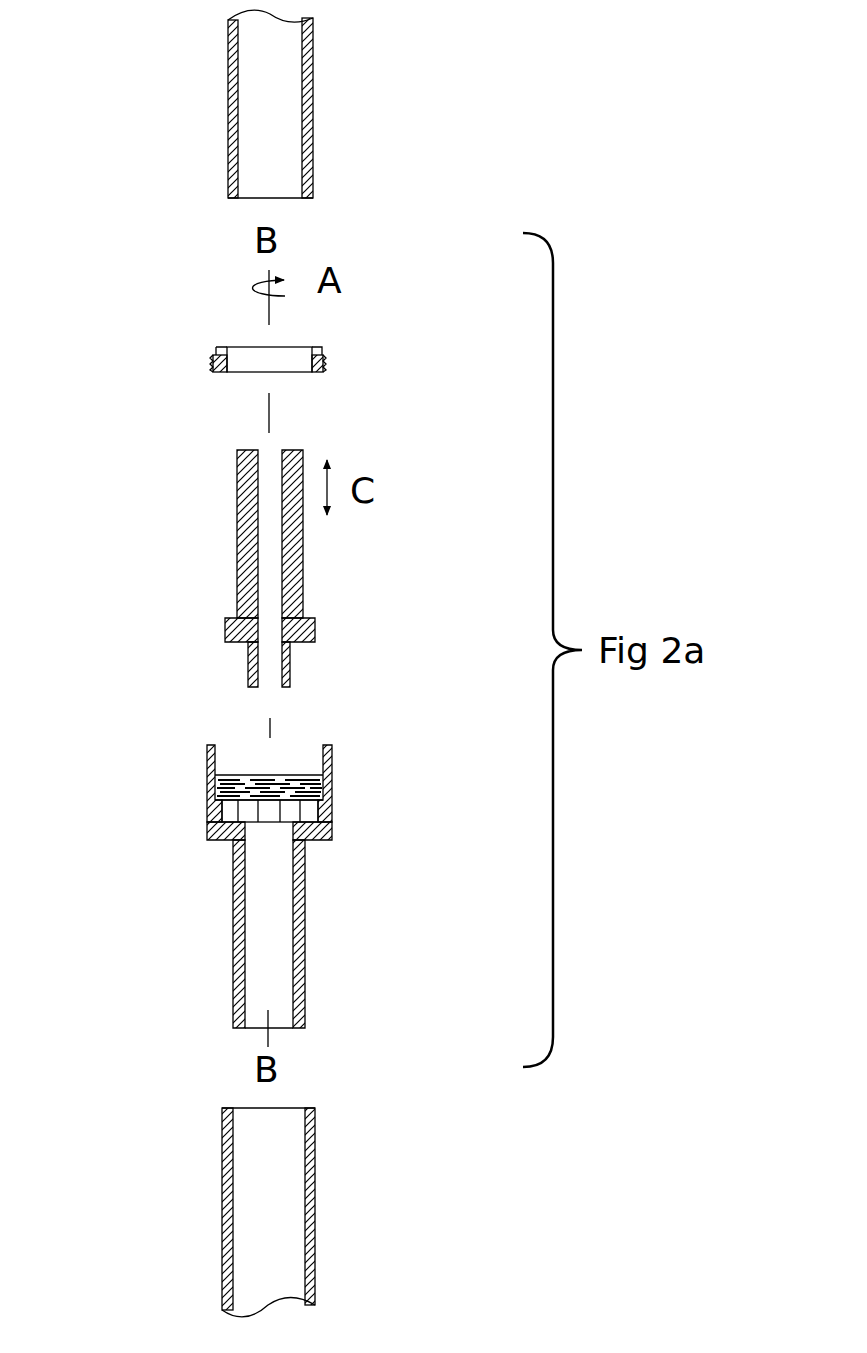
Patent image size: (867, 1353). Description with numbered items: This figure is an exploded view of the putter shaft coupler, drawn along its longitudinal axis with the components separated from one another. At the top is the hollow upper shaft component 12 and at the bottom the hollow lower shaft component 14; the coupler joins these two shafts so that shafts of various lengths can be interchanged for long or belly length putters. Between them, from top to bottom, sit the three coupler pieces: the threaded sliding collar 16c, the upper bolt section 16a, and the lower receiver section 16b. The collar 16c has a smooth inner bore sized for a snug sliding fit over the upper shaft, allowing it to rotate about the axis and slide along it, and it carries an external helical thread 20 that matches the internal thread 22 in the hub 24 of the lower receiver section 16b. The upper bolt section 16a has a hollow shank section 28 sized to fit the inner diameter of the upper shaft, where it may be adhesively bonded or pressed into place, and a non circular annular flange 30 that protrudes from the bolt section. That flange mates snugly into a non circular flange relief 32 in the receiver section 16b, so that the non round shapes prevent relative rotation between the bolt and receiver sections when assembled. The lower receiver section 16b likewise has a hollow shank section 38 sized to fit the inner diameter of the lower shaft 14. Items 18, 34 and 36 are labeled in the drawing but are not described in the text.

The upper shaft component 12 is at (313, 88).
The lower shaft component 14 is at (315, 1225).
The upper bolt section 16a is at (288, 568).
The lower receiver section 16b is at (282, 882).
The threaded sliding collar 16c is at (301, 361).
The nut shoulder 18 is at (230, 345).
The external helical thread 20 is at (215, 370).
The internal thread 22 is at (237, 775).
The hub 24 is at (208, 823).
The hollow shank section 28 is at (237, 578).
The non circular annular flange 30 is at (223, 632).
The non circular flange relief 32 is at (317, 807).
The male member stem 34 is at (248, 670).
The bore 36 is at (267, 872).
The hollow shank section 38 is at (233, 977).